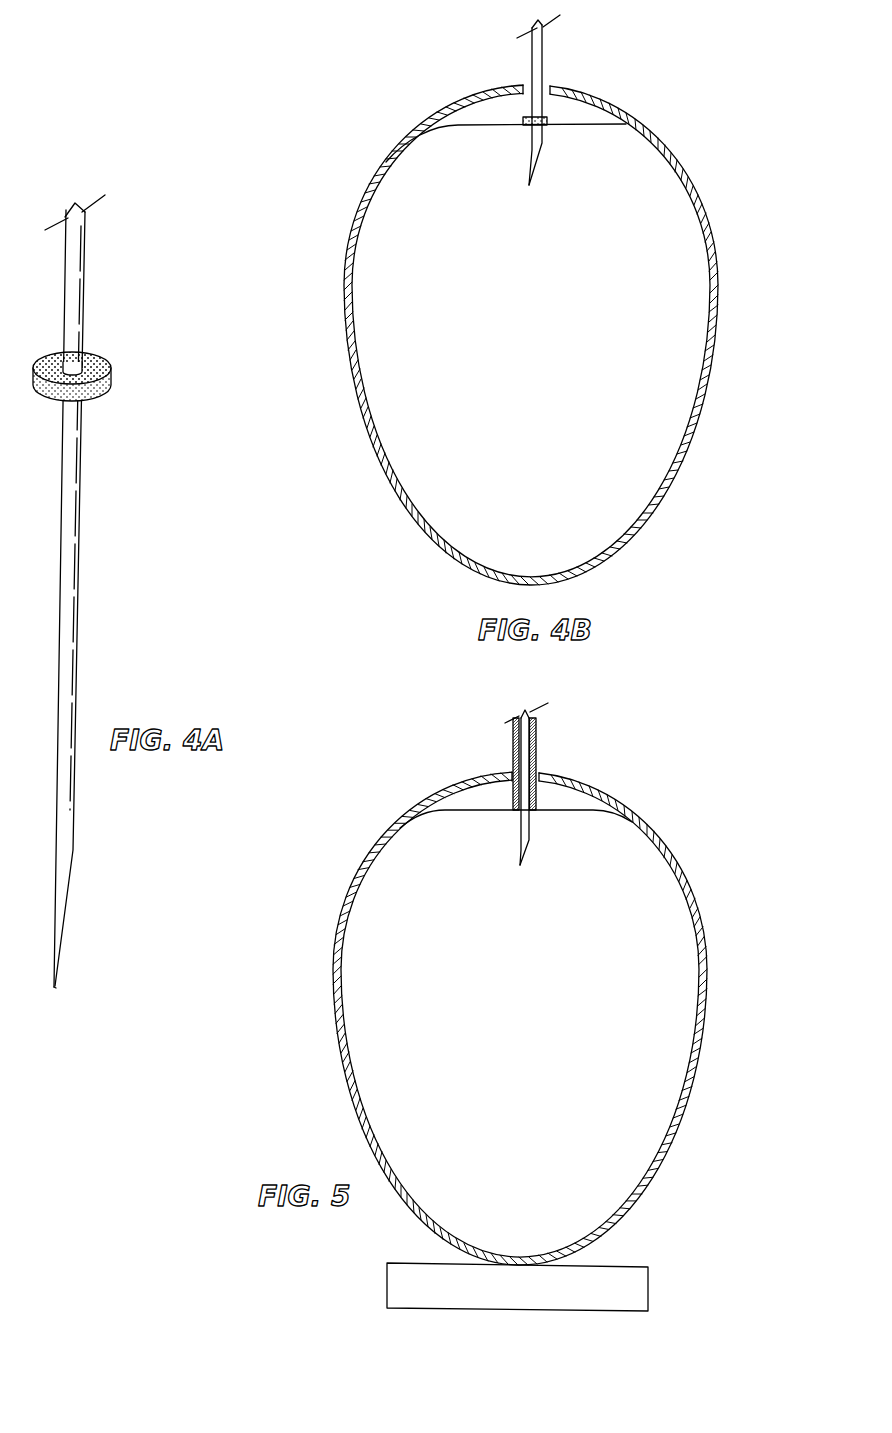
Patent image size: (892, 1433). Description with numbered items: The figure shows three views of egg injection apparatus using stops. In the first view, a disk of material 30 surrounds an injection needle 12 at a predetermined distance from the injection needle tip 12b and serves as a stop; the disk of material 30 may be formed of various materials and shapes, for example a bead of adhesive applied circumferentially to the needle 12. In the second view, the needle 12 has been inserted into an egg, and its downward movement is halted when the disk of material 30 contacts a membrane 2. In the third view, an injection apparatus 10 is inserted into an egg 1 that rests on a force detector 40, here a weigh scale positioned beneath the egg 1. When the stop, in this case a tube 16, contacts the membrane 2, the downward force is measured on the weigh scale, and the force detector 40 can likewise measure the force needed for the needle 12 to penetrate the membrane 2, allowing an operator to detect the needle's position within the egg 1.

In FIG. 4B, the egg 1 is at (688, 168).
In FIG. 5, the egg 1 is at (666, 838).
In FIG. 4B, the membrane 2 is at (614, 121).
In FIG. 5, the membrane 2 is at (584, 809).
In FIG. 5, the injection apparatus 10 is at (558, 779).
In FIG. 4A, the injection needle 12 is at (82, 558).
In FIG. 4B, the injection needle 12 is at (548, 50).
In FIG. 5, the injection needle 12 is at (528, 828).
In FIG. 4A, the injection needle tip 12b is at (54, 988).
In FIG. 5, the tube 16 is at (510, 800).
In FIG. 4A, the disk of material 30 is at (95, 353).
In FIG. 4B, the disk of material 30 is at (550, 115).
In FIG. 5, the force detector 40 is at (634, 1265).